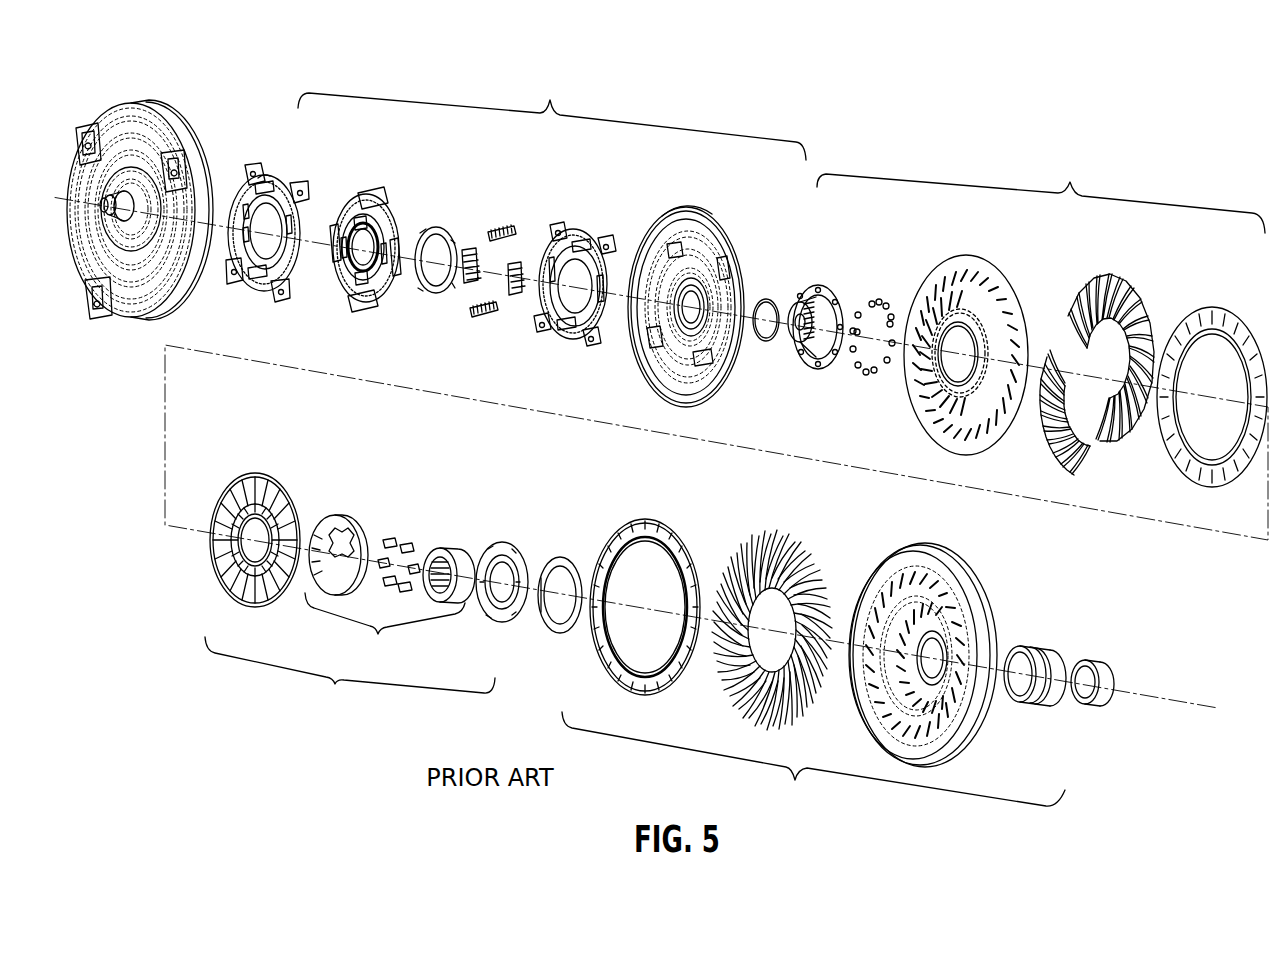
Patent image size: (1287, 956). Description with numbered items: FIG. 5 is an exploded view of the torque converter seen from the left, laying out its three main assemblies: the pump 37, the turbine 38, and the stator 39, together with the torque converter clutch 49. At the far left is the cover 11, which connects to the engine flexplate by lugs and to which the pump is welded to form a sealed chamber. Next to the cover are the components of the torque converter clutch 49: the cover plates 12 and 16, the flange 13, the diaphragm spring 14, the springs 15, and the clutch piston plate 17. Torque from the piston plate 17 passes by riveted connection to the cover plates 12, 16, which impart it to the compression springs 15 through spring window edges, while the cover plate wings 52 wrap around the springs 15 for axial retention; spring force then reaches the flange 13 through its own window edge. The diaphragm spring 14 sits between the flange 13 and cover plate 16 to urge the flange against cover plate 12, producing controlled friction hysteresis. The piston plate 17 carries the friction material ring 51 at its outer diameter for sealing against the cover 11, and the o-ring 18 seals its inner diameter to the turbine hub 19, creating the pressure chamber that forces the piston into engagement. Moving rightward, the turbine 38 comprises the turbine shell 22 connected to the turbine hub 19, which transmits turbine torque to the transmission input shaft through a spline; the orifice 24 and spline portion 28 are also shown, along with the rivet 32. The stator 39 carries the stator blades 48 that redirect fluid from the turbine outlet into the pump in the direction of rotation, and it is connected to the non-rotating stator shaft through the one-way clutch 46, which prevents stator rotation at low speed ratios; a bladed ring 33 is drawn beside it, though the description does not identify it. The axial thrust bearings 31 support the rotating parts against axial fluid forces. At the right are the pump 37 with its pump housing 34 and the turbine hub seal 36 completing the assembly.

The cover 11 is at (213, 126).
The cover plate 12 is at (304, 208).
The flange 13 is at (398, 181).
The diaphragm spring 14 is at (452, 219).
The springs 15 is at (528, 212).
The cover plate 16 is at (607, 208).
The clutch piston plate 17 is at (707, 277).
The o-ring 18 is at (788, 280).
The turbine hub 19 is at (845, 275).
The turbine shell 22 is at (1010, 257).
The orifice 24 is at (1226, 298).
The spline portion 28 is at (463, 537).
The axial thrust bearings 31 is at (586, 541).
The rivet 32 is at (700, 526).
The stator blade ring 33 is at (843, 542).
The pump housing 34 is at (998, 572).
The turbine hub seal 36 is at (1105, 652).
The pump 37 is at (813, 762).
The turbine 38 is at (1041, 191).
The stator 39 is at (350, 679).
The one-way clutch 46 is at (390, 590).
The stator blades 48 is at (260, 473).
The torque converter clutch 49 is at (552, 114).
The friction material ring 51 is at (686, 213).
The cover plate wings 52 is at (270, 178).